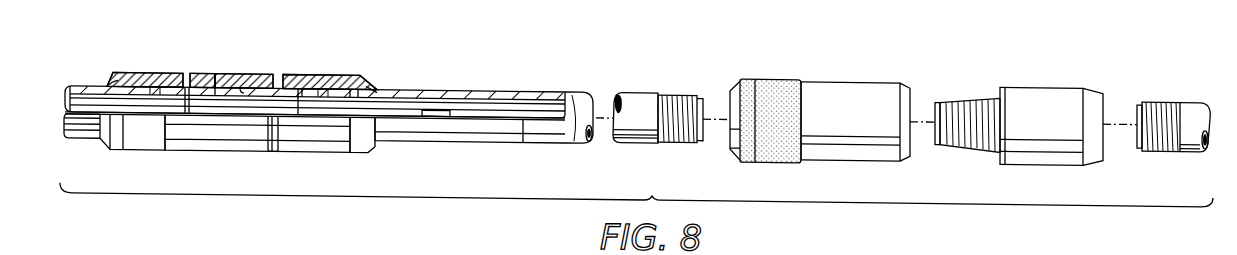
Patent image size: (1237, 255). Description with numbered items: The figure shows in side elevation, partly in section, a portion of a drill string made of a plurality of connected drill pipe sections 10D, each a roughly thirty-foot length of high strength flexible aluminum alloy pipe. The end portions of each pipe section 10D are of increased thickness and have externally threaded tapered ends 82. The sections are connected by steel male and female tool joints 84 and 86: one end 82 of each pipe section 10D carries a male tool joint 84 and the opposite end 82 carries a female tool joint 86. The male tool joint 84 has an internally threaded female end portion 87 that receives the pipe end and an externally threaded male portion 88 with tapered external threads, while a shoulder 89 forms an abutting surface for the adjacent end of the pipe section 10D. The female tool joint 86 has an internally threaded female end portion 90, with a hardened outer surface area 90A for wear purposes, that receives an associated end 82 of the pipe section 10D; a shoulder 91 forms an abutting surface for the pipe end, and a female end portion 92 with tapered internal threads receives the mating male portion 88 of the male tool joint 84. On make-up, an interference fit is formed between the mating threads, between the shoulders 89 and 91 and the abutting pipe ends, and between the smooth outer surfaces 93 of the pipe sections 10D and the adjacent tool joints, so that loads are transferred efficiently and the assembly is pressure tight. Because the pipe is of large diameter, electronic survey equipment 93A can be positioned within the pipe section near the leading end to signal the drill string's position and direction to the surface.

The drill pipe section 10D is at (82, 78).
The externally threaded tapered end 82 is at (155, 75).
The male tool joint 84 is at (338, 65).
The female tool joint 86 is at (183, 66).
The internally threaded female end portion 87 is at (358, 79).
The externally threaded male portion 88 is at (252, 80).
The shoulder 89 is at (307, 89).
The internally threaded female end portion 90 is at (150, 86).
The hardened outer surface area 90A is at (137, 150).
The shoulder 91 is at (183, 95).
The female end portion 92 is at (240, 84).
The smooth outer surface 93 is at (128, 80).
The electronic survey equipment 93A is at (435, 95).